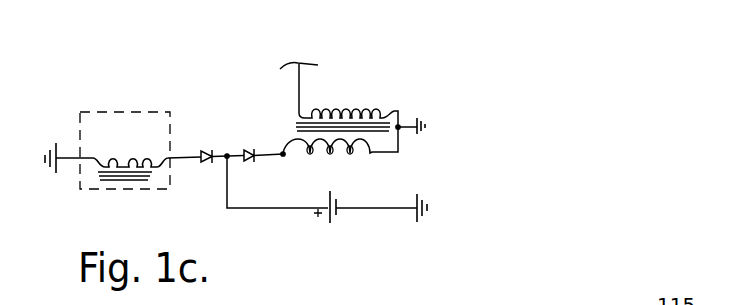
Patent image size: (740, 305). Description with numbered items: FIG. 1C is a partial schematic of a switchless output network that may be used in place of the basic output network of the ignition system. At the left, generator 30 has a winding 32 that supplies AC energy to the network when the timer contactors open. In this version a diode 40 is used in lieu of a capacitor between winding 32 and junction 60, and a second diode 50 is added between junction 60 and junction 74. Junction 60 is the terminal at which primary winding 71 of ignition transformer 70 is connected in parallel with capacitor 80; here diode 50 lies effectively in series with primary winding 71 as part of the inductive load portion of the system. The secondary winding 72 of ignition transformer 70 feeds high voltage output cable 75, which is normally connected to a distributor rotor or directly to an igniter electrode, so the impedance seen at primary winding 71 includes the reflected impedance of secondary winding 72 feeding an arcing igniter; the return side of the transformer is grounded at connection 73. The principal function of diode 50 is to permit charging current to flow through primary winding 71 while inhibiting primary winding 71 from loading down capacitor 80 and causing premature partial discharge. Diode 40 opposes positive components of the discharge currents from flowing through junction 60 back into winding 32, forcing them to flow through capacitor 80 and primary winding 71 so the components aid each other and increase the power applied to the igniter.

The generator 30 is at (140, 131).
The winding 32 is at (133, 157).
The diode 40 is at (208, 158).
The diode 50 is at (248, 158).
The junction 60 is at (227, 152).
The ignition transformer 70 is at (347, 113).
The primary winding 71 is at (328, 156).
The secondary winding 72 is at (357, 110).
The ground connection 73 is at (400, 126).
The junction 74 is at (284, 157).
The high voltage output cable 75 is at (299, 83).
The capacitor 80 is at (338, 209).